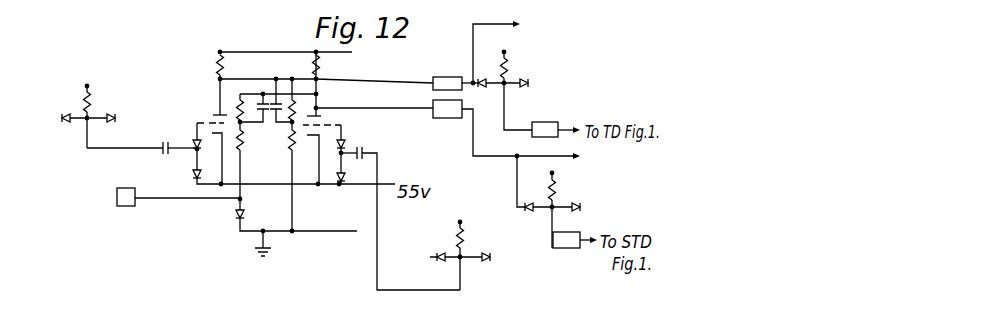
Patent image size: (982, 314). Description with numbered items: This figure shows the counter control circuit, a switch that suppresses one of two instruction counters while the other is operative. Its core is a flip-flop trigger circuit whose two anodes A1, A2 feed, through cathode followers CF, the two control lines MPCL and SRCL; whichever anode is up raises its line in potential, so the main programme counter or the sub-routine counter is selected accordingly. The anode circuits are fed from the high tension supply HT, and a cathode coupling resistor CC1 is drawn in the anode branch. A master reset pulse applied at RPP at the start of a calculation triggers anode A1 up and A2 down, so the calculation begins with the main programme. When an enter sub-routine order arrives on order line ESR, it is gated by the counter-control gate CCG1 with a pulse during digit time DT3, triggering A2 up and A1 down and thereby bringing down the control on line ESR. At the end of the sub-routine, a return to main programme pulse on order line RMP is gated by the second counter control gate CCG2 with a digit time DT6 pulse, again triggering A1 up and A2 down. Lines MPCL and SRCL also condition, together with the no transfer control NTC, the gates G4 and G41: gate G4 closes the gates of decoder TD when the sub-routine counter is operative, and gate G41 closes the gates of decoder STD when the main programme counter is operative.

The cathode coupling resistor CC1 is at (205, 95).
The anode A1 is at (213, 115).
The anode A2 is at (320, 117).
The high tension supply HT is at (62, 86).
The digit time DT6 is at (60, 118).
The order line RMP is at (117, 118).
The second counter control gate CCG2 is at (80, 124).
The master reset pulse input RPP is at (115, 198).
The cathode follower CF is at (436, 88).
The main programme control line MPCL is at (473, 77).
The gate G4 is at (522, 79).
The no transfer control NTC is at (528, 83).
The sub-routine control line SRCL is at (512, 160).
The gate G41 is at (586, 219).
The digit time DT3 is at (428, 257).
The order line ESR is at (490, 257).
The counter-control gate CCG1 is at (465, 262).